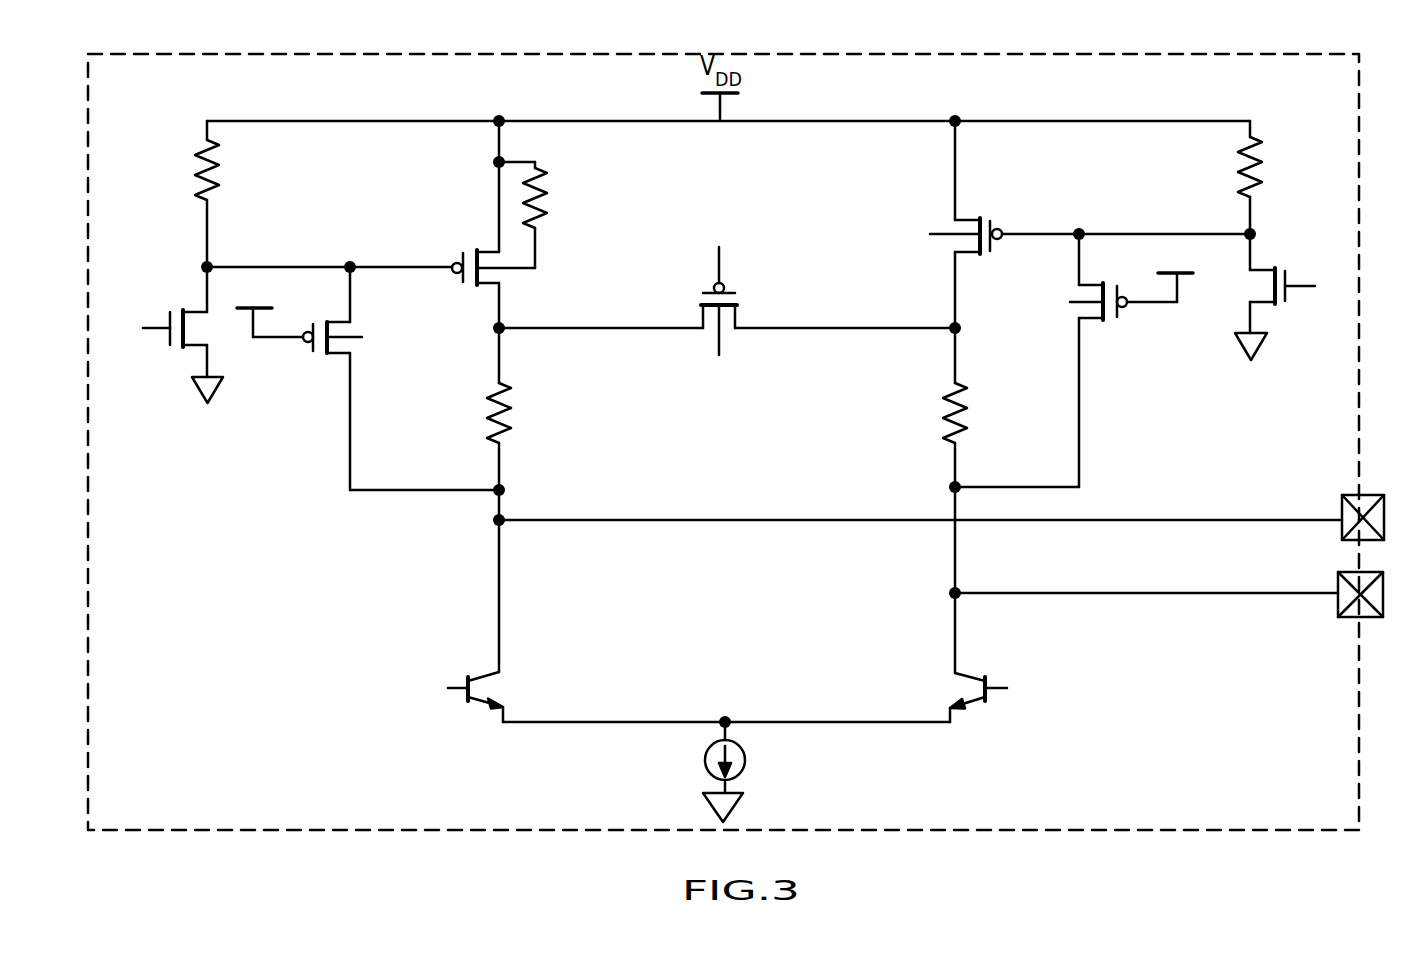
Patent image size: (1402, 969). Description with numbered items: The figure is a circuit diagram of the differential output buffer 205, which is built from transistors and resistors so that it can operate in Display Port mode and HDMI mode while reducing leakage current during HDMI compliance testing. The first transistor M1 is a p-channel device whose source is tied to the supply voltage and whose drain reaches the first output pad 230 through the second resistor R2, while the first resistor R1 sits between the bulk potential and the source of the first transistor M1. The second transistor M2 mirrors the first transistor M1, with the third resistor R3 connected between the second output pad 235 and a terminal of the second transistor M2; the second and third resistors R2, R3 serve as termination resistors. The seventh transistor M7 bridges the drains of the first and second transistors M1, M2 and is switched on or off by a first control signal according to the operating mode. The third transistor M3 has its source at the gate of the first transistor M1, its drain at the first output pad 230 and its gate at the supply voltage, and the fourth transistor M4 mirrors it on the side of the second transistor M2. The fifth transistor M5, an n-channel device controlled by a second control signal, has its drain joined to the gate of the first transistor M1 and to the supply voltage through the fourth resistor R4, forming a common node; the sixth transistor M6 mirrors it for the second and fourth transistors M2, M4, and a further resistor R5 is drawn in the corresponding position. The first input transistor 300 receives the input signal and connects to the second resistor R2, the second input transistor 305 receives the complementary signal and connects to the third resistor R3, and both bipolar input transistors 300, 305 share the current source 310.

The output buffer 205 is at (88, 158).
The first output pad 230 is at (1345, 493).
The second output pad 235 is at (1343, 618).
The first input transistor 300 is at (483, 675).
The second input transistor 305 is at (967, 672).
The current source 310 is at (702, 763).
The first resistor R1 is at (545, 193).
The second resistor R2 is at (507, 402).
The third resistor R3 is at (947, 405).
The fourth resistor R4 is at (215, 178).
The resistor R5 is at (1257, 177).
The first transistor M1 is at (490, 247).
The second transistor M2 is at (968, 218).
The third transistor M3 is at (333, 357).
The fourth transistor M4 is at (1090, 320).
The fifth transistor M5 is at (188, 308).
The sixth transistor M6 is at (1268, 270).
The seventh transistor M7 is at (740, 310).